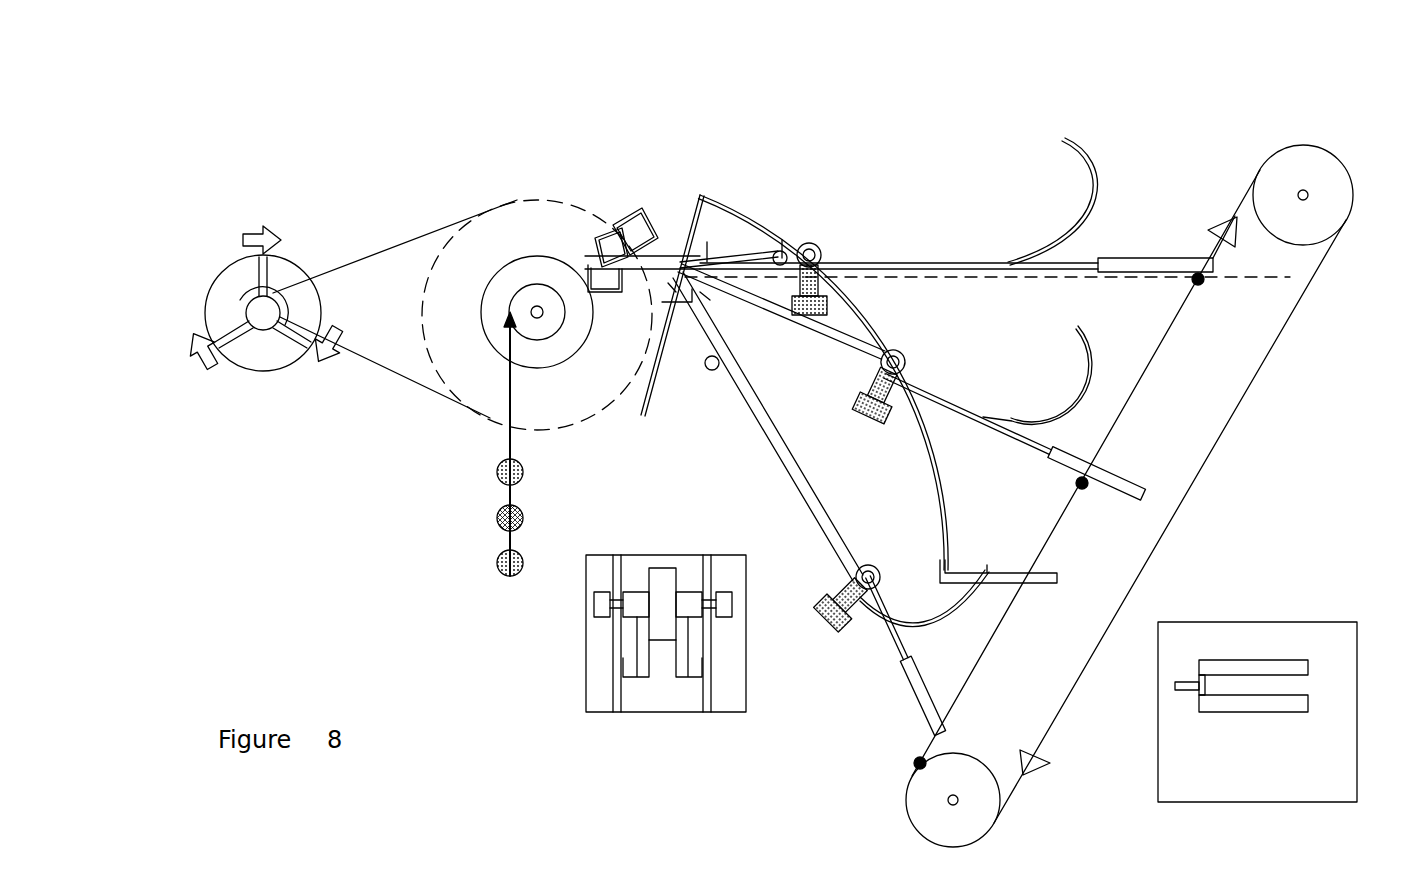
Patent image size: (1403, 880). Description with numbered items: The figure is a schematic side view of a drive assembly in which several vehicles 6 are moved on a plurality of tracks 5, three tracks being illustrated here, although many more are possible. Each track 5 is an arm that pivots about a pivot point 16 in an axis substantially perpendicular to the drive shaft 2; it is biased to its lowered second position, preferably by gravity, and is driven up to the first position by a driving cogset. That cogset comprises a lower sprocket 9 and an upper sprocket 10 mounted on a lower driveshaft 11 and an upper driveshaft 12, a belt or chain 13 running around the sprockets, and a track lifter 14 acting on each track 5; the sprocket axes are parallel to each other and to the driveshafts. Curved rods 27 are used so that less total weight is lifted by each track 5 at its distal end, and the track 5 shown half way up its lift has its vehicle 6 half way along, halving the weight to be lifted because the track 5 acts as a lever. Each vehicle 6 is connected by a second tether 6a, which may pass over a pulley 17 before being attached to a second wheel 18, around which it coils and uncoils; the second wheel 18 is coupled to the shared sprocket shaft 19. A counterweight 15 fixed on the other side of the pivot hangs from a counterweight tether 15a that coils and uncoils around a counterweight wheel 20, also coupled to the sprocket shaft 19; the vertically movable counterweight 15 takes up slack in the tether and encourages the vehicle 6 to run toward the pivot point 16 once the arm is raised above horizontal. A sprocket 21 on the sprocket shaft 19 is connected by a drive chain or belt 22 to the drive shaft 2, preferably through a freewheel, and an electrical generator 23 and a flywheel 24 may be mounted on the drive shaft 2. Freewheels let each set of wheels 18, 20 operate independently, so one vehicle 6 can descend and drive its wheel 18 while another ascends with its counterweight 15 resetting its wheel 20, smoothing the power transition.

The drive shaft 2 is at (240, 303).
The track 5 is at (1060, 272).
The vehicle 6 is at (840, 275).
The second tether 6a is at (737, 254).
The lower sprocket 9 is at (908, 805).
The upper sprocket 10 is at (1298, 148).
The lower driveshaft 11 is at (960, 803).
The upper driveshaft 12 is at (1310, 190).
The belt or chain 13 is at (1200, 488).
The track lifter 14 is at (1198, 287).
The counterweight 15 is at (497, 473).
The counterweight tether 15a is at (502, 402).
The pivot point 16 is at (681, 306).
The pulley 17 is at (680, 262).
The second wheel 18 is at (578, 366).
The sprocket shaft 19 is at (535, 305).
The counterweight wheel 20 is at (530, 336).
The sprocket 21 is at (556, 200).
The drive chain or belt 22 is at (388, 380).
The electrical generator 23 is at (245, 287).
The flywheel 24 is at (290, 262).
The curved rods 27 is at (903, 300).